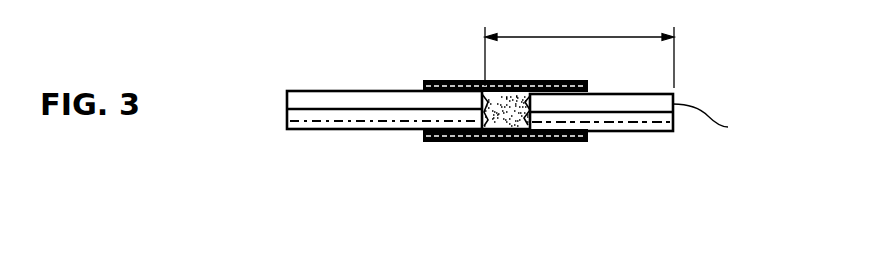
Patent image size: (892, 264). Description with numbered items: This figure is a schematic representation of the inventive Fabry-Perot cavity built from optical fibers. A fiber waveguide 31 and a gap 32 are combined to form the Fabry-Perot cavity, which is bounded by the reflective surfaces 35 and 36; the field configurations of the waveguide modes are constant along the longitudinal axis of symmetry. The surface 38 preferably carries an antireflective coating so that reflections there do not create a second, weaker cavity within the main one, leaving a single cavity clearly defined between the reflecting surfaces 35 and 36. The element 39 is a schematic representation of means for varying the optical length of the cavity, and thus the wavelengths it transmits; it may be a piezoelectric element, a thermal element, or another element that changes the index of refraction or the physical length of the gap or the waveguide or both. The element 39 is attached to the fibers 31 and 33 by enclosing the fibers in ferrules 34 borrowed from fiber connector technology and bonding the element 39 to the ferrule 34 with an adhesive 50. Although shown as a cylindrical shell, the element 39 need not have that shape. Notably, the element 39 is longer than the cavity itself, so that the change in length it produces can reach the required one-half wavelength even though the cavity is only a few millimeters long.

The fiber waveguide 31 is at (612, 133).
The gap 32 is at (517, 82).
The fiber 33 is at (339, 108).
The ferrule 34 is at (315, 119).
The reflective surface 35 is at (488, 142).
The reflective surface 36 is at (717, 119).
The surface 38 is at (520, 123).
The means for varying the optical length of the cavity 39 is at (452, 80).
The adhesive 50 is at (443, 142).